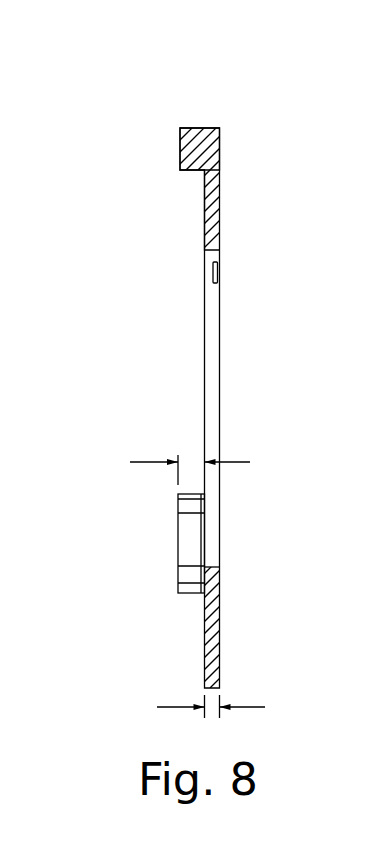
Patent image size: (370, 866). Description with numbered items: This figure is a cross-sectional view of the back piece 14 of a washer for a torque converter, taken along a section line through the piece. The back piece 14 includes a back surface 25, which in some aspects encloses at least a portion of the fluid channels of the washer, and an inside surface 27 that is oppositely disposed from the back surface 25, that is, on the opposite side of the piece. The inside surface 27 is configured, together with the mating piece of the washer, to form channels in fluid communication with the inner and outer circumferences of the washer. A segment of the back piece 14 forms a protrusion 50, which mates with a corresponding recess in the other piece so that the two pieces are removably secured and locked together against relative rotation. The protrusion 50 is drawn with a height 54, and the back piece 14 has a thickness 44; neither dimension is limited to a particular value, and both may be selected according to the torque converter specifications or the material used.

The back piece 14 is at (204, 403).
The back surface 25 is at (221, 142).
The inside surface 27 is at (204, 238).
The protrusion 50 is at (178, 542).
The height 54 is at (173, 468).
The thickness 44 is at (189, 708).